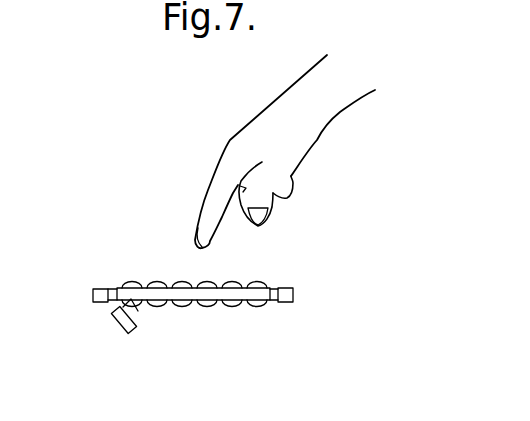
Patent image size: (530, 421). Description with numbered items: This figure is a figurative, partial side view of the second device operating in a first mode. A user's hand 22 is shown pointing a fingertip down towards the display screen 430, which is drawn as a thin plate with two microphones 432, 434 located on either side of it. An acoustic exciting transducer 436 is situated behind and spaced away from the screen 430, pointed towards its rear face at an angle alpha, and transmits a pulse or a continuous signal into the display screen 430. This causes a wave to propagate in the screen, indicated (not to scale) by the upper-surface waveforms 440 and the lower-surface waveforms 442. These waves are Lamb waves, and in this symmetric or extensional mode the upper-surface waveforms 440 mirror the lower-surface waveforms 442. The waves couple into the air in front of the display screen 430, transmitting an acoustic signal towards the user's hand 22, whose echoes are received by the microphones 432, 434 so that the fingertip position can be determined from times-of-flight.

The user's hand 22 is at (243, 142).
The display screen 430 is at (238, 298).
The microphone 432 is at (93, 293).
The microphone 434 is at (293, 294).
The acoustic exciting transducer 436 is at (116, 327).
The upper-surface waveforms 440 is at (157, 283).
The lower-surface waveforms 442 is at (183, 305).